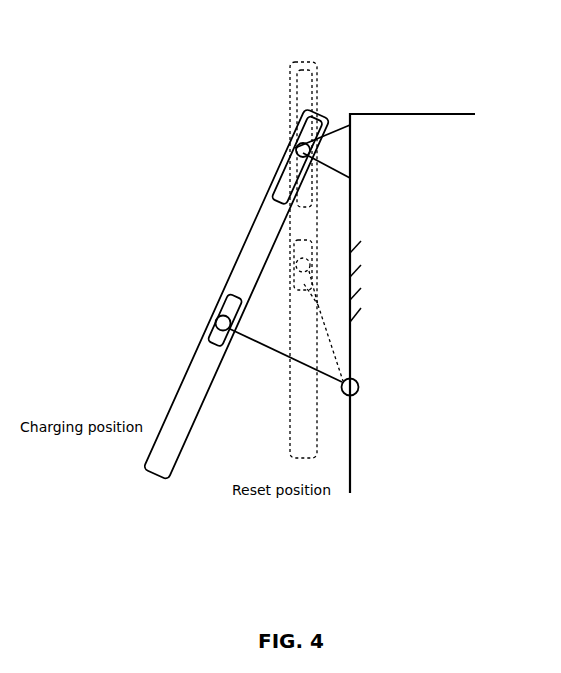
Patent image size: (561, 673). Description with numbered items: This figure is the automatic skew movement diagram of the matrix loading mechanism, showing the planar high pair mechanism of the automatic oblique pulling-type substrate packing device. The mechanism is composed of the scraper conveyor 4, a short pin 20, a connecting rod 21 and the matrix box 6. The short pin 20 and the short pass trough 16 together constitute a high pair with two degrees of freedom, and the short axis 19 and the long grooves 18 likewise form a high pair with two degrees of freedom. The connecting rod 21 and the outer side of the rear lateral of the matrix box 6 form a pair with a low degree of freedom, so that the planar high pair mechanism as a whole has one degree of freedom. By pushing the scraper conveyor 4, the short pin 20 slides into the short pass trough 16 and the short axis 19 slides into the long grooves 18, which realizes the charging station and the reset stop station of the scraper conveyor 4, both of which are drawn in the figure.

The scraper conveyor 4 is at (248, 272).
The matrix box 6 is at (407, 190).
The short pass trough 16 is at (233, 307).
The long grooves 18 is at (280, 188).
The short axis 19 is at (296, 144).
The short pin 20 is at (216, 322).
The connecting rod 21 is at (270, 348).